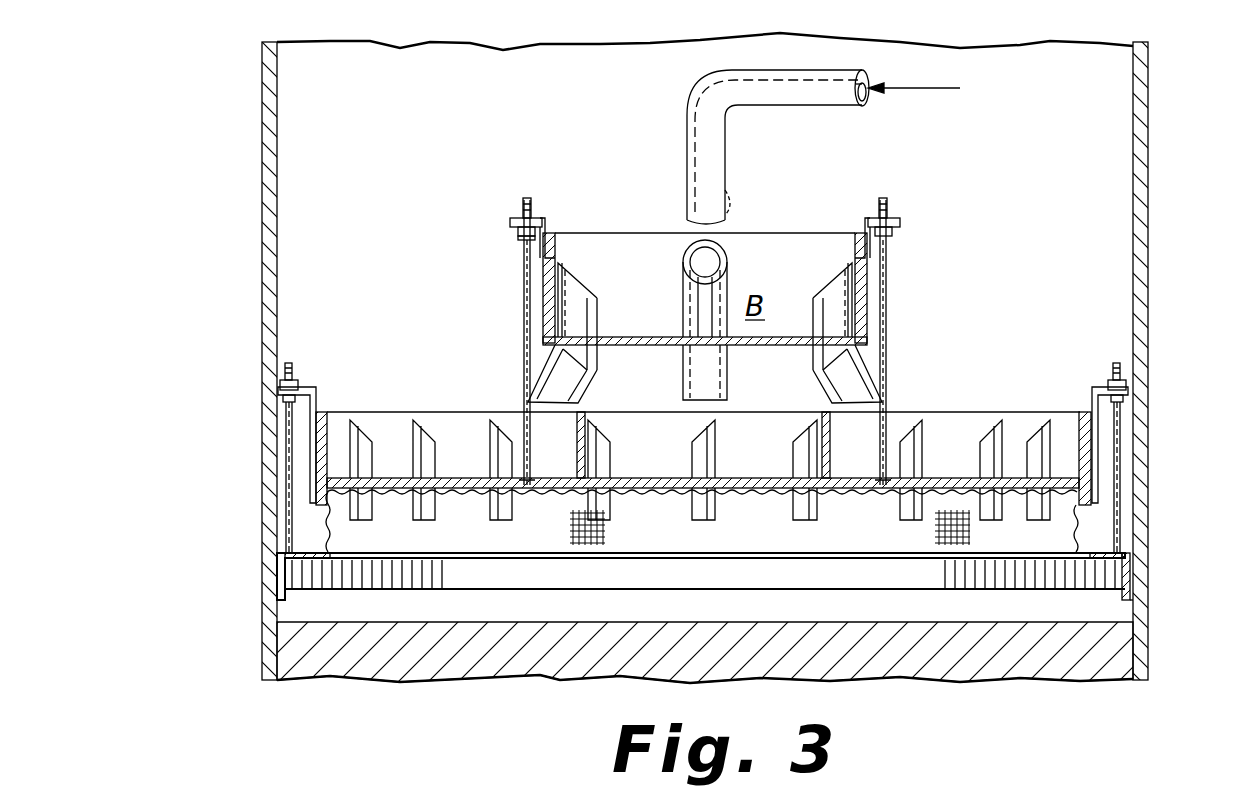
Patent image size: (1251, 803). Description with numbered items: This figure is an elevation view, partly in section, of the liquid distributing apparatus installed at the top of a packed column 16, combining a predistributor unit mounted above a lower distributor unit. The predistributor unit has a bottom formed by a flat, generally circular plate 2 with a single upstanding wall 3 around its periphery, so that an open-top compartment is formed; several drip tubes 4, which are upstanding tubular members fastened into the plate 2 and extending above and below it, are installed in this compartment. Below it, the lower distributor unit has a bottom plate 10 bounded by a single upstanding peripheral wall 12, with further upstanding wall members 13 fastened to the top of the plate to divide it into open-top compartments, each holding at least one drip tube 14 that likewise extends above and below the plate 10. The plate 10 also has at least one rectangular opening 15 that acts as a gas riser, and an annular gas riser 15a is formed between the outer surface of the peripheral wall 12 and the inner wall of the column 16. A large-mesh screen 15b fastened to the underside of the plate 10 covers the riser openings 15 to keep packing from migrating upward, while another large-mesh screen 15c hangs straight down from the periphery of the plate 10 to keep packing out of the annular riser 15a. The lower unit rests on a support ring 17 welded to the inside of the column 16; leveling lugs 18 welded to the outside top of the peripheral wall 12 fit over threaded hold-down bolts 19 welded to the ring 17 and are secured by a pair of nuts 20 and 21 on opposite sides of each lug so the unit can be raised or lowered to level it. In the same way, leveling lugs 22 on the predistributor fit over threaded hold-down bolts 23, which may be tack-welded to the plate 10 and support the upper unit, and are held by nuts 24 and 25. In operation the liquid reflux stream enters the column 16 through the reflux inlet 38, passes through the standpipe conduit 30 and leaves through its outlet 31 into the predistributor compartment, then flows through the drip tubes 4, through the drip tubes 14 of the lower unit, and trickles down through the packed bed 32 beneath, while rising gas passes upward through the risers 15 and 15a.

The flat, generally circular plate 2 is at (658, 337).
The upstanding wall 3 is at (595, 250).
The drip tubes 4 is at (586, 300).
The flat, generally circular plate 10 is at (472, 480).
The upstanding peripheral wall 12 is at (668, 448).
The lengthwise upstanding wall members 13 is at (580, 462).
The drip tubes 14 is at (708, 470).
The rectangular opening 15 is at (470, 490).
The annular space 15a is at (326, 522).
The large-mesh screen 15b is at (730, 498).
The large-mesh screen 15c is at (585, 545).
The column 16 is at (268, 138).
The support ring 17 is at (284, 598).
The leveling lugs 18 is at (313, 425).
The threaded hold-down bolts 19 is at (288, 436).
The nut 20 is at (283, 372).
The nut 21 is at (284, 398).
The leveling lugs 22 is at (547, 232).
The threaded hold-down bolts 23 is at (524, 315).
The nut 24 is at (520, 212).
The nut 25 is at (518, 230).
The standpipe conduit 30 is at (700, 180).
The outlet 31 is at (735, 215).
The packed bed 32 is at (990, 656).
The reflux inlet 38 is at (806, 100).